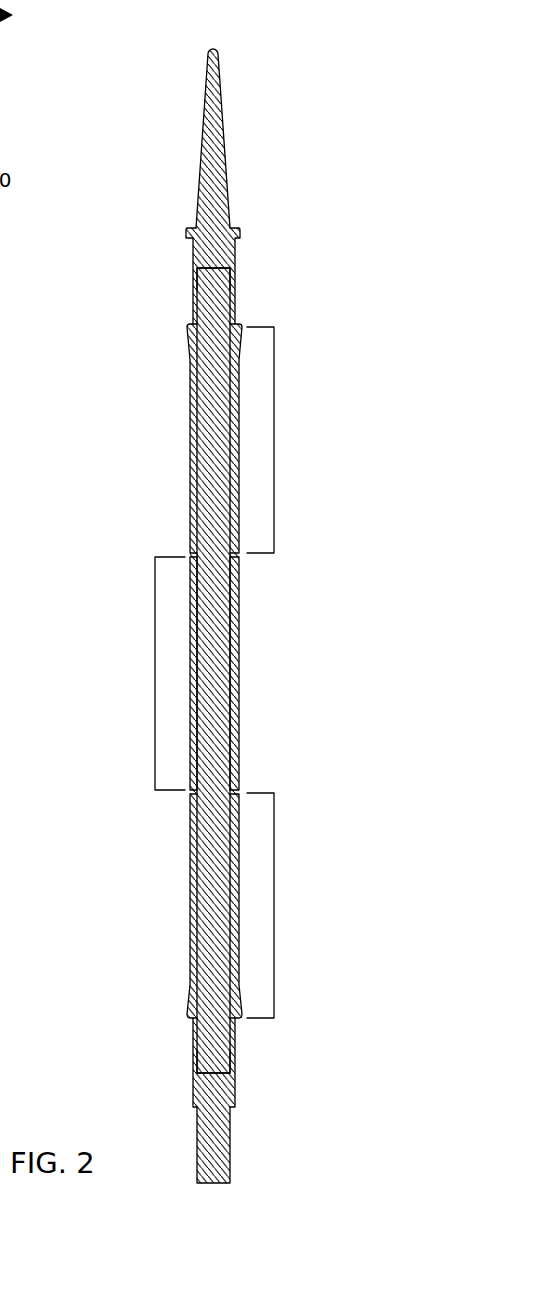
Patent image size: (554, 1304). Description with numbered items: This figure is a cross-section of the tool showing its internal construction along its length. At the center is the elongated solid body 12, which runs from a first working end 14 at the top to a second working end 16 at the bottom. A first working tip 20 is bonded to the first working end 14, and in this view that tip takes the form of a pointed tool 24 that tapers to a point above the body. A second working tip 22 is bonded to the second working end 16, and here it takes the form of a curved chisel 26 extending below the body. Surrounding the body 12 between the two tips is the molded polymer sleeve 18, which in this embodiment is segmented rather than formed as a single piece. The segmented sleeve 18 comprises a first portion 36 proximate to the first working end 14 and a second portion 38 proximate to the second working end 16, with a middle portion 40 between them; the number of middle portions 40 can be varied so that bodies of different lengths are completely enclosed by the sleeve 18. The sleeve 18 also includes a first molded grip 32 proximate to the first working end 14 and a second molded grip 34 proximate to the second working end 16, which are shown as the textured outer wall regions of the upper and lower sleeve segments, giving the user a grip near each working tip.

The elongated solid body 12 is at (218, 727).
The first working end 14 is at (220, 287).
The second working end 16 is at (210, 1052).
The molded polymer sleeve 18 is at (240, 657).
The first working tip 20 is at (238, 231).
The second working tip 22 is at (193, 1098).
The pointed tool 24 is at (203, 112).
The curved chisel 26 is at (222, 1148).
The first molded grip 32 is at (190, 437).
The second molded grip 34 is at (274, 895).
The first portion 36 is at (274, 437).
The second portion 38 is at (190, 898).
The middle portion 40 is at (155, 675).